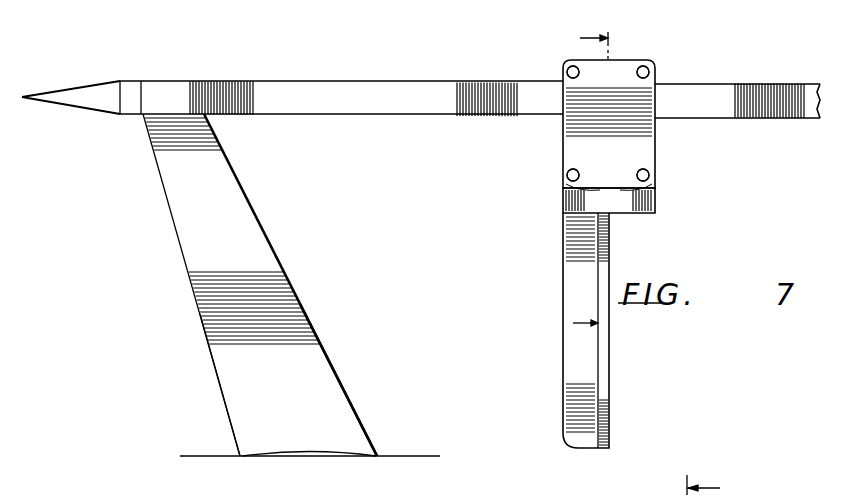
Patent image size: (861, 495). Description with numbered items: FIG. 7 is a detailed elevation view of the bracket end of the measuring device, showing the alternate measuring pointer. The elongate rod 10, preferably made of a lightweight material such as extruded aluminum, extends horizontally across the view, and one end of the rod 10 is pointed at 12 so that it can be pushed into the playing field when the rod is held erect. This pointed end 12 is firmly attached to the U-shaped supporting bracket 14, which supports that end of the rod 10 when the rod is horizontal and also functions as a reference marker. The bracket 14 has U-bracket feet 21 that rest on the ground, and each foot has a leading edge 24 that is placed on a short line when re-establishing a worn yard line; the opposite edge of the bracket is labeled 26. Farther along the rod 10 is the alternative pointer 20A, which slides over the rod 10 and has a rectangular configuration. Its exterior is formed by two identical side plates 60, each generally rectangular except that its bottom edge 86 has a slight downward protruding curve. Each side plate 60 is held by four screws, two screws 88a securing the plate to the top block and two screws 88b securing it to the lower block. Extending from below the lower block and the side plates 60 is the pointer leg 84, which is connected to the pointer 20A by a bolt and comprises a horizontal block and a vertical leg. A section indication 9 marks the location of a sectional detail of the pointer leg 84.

The elongate rod 10 is at (329, 82).
The pointed end 12 is at (55, 94).
The U-shaped supporting bracket 14 is at (252, 214).
The leading edge 24 is at (340, 378).
The leading edge of fin 26 is at (225, 407).
The U-bracket feet 21 is at (318, 458).
The pointer 20A is at (636, 240).
The side plates 60 is at (645, 139).
The screws 88a is at (648, 68).
The screws 88b is at (638, 172).
The bottom edge 86 is at (640, 192).
The pointer leg 84 is at (575, 246).
The section line 9 is at (713, 485).